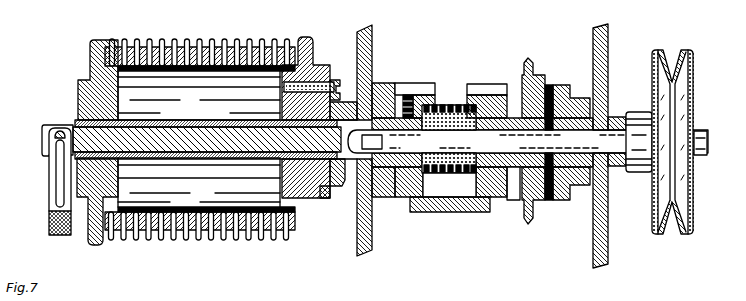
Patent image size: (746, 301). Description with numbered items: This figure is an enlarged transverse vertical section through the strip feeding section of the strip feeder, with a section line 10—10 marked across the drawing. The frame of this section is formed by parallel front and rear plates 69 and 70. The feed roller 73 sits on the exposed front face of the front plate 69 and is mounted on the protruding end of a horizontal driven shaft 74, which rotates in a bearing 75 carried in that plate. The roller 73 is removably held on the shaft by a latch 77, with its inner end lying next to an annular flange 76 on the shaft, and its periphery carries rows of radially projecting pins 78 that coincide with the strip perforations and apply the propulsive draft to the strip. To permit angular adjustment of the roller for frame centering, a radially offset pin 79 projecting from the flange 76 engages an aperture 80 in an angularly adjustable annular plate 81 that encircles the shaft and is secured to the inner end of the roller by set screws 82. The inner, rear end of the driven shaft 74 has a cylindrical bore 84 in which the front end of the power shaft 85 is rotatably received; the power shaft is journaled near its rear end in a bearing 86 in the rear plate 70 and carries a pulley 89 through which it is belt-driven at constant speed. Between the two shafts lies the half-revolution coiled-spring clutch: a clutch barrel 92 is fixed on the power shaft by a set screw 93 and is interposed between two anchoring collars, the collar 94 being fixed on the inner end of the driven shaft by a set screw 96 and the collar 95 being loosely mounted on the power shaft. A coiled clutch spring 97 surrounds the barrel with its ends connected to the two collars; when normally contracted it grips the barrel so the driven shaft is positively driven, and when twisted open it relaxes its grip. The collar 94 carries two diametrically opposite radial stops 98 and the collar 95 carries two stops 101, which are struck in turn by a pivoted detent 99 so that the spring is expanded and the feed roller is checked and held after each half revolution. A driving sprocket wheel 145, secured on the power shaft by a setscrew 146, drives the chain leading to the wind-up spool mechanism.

The section line 10- 10 is at (332, 272).
The front plate 69 is at (364, 40).
The rear plate 70 is at (602, 48).
The feed roller 73 is at (100, 200).
The driven shaft 74 is at (176, 160).
The bearing 75 is at (381, 88).
The annular flange 76 is at (344, 186).
The latch 77 is at (51, 185).
The pins 78 is at (212, 41).
The radially offset pin 79 is at (320, 205).
The aperture 80 is at (286, 178).
The angularly adjustable annular plate 81 is at (318, 65).
The set screws 82 is at (338, 80).
The cylindrical bore 84 is at (382, 200).
The power shaft 85 is at (548, 200).
The bearing 86 is at (576, 98).
The pulley 89 is at (666, 56).
The clutch barrel 92 is at (455, 176).
The set screw 93 is at (450, 104).
The anchoring collar 94 is at (414, 84).
The anchoring collar 95 is at (488, 94).
The set screw 96 is at (408, 84).
The coiled clutch spring 97 is at (440, 176).
The radial stops 98 is at (426, 84).
The detent 99 is at (472, 212).
The stops 101 is at (476, 84).
The driving sprocket wheel 145 is at (530, 60).
The setscrew 146 is at (549, 85).